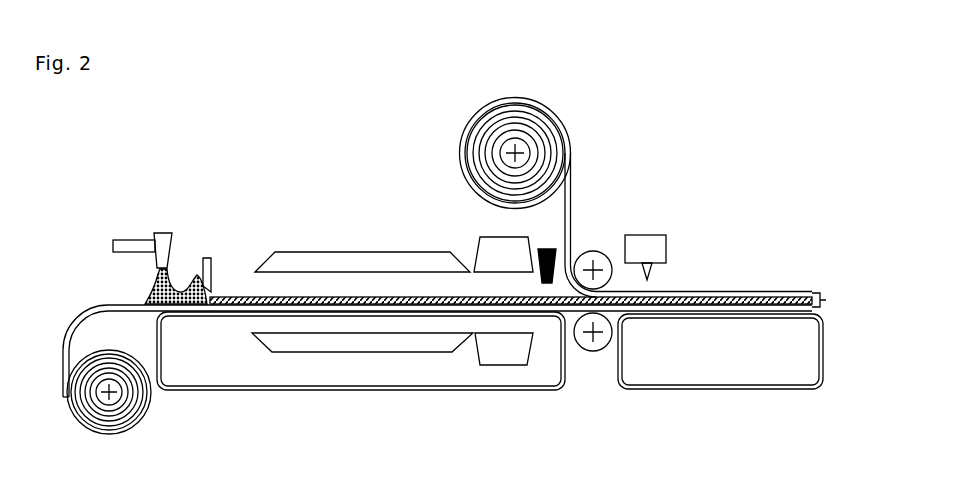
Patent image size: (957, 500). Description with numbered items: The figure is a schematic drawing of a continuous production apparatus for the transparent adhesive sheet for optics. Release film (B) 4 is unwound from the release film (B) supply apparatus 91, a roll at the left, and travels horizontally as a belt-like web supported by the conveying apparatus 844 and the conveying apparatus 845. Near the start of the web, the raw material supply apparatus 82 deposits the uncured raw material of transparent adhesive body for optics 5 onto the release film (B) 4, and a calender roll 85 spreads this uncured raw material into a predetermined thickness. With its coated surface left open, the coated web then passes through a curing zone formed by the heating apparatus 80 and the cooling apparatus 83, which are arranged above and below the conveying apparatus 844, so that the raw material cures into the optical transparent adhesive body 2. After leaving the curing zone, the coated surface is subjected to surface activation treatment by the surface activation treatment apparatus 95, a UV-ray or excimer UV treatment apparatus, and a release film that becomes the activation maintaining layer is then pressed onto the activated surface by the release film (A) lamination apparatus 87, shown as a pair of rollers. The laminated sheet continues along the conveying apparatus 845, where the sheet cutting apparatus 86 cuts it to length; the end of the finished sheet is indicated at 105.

The optical transparent adhesive body 2 is at (723, 298).
The release film (B) 4 is at (80, 313).
The uncured raw material of transparent adhesive body for optics 5 is at (150, 287).
The heating apparatus (heater) 80 is at (347, 252).
The raw material supply apparatus 82 is at (113, 242).
The cooling apparatus 83 is at (477, 247).
The calender roll 85 is at (215, 265).
The sheet cutting apparatus 86 is at (647, 233).
The release film (A) lamination apparatus 87 is at (590, 250).
The release film (B) supply apparatus (roll) 91 is at (147, 413).
The surface activation treatment apparatus 95 is at (547, 248).
The sheet end 105 is at (827, 300).
The conveying apparatus (conveyor) 844 is at (273, 388).
The conveying apparatus (conveyor) 845 is at (667, 390).